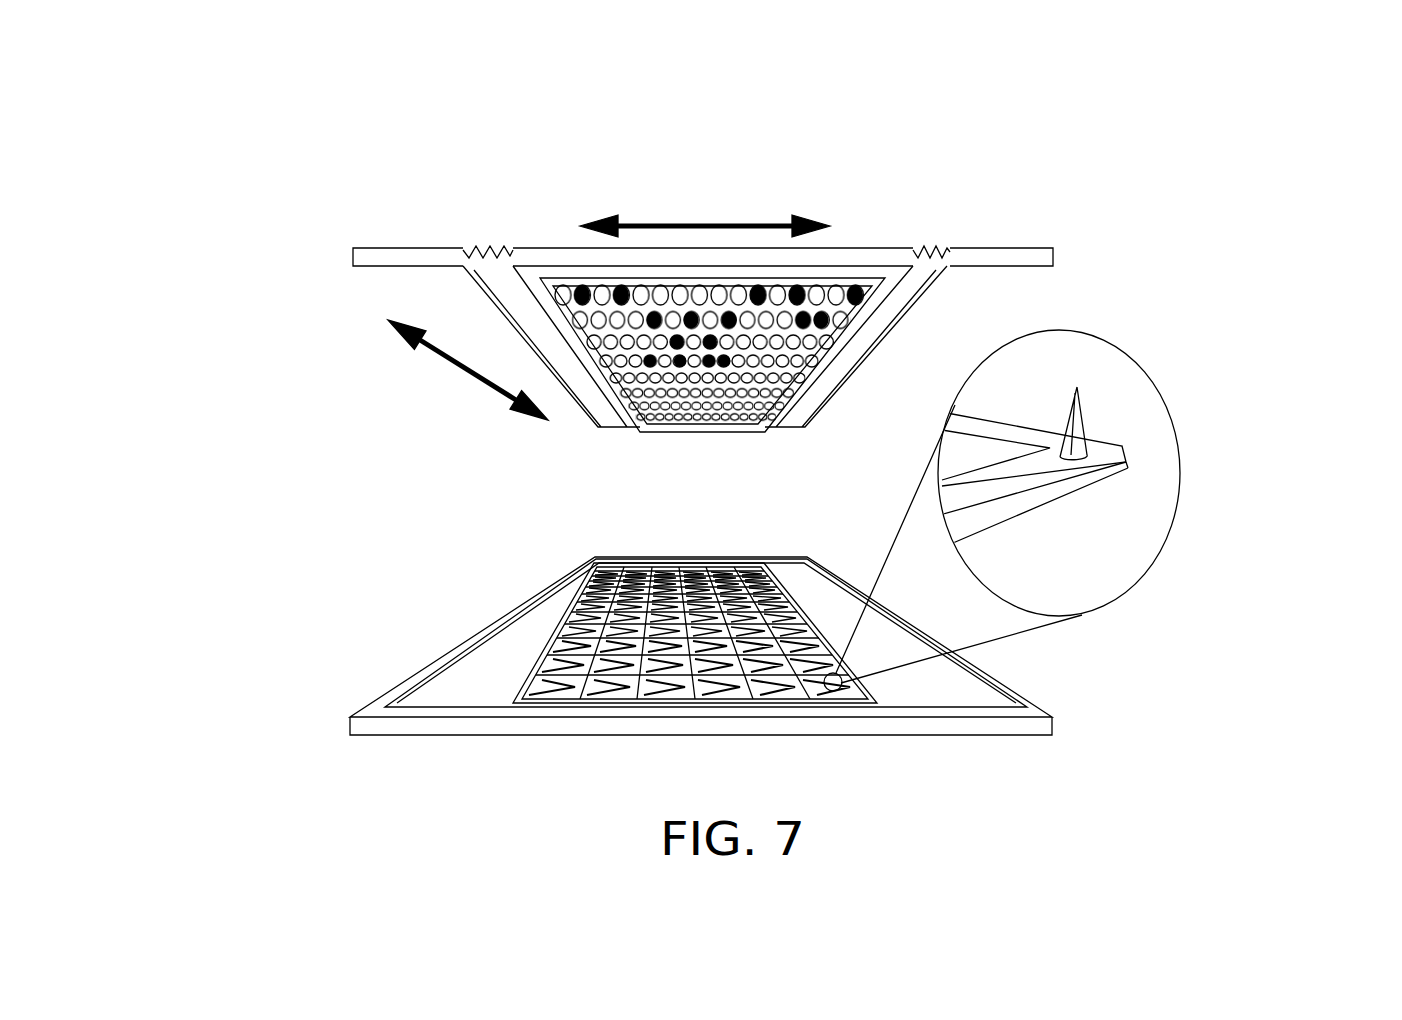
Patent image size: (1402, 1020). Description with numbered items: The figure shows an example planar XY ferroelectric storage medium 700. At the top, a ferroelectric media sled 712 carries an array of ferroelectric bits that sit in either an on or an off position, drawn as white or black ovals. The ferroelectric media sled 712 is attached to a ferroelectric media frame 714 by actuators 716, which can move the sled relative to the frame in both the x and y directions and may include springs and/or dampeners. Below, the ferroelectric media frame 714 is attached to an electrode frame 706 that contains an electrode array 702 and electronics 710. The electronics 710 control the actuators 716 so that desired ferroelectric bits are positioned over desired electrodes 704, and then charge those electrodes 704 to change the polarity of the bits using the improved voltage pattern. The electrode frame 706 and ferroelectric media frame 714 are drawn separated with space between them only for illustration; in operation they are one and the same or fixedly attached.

The planar XY ferroelectric storage medium 700 is at (184, 152).
The electrode array 702 is at (673, 552).
The electrode 704 is at (1085, 425).
The electrode frame 706 is at (405, 680).
The electronics 710 is at (475, 645).
The ferroelectric media sled 712 is at (833, 248).
The ferroelectric media frame 714 is at (395, 293).
The actuators 716 is at (487, 252).